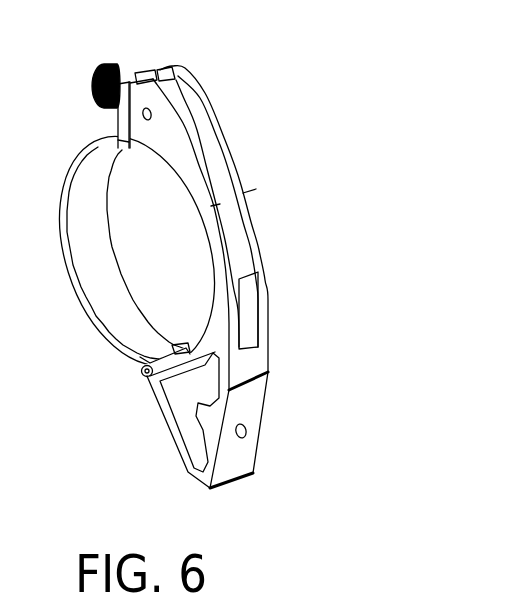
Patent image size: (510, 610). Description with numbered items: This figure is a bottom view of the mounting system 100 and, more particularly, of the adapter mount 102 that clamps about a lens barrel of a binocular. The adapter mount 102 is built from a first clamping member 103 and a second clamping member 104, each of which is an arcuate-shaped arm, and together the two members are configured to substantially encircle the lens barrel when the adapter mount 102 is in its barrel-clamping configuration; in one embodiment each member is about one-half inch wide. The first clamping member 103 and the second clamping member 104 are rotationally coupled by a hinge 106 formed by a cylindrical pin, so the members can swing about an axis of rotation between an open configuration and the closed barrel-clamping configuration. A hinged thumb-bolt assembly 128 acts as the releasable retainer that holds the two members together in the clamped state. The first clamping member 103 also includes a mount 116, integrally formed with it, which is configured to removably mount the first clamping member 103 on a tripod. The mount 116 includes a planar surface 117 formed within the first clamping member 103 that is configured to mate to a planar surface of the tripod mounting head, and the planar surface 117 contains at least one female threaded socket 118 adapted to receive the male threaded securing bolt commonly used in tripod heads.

The mounting assembly 100 is at (242, 100).
The adapter mount 102 is at (247, 146).
The first clamping member 103 is at (260, 226).
The second clamping member 104 is at (106, 251).
The hinge 106 is at (142, 373).
The mount 116 is at (262, 465).
The planar surface 117 is at (250, 393).
The female threaded socket 118 is at (247, 430).
The hinged thumb-bolt assembly 128 is at (118, 62).